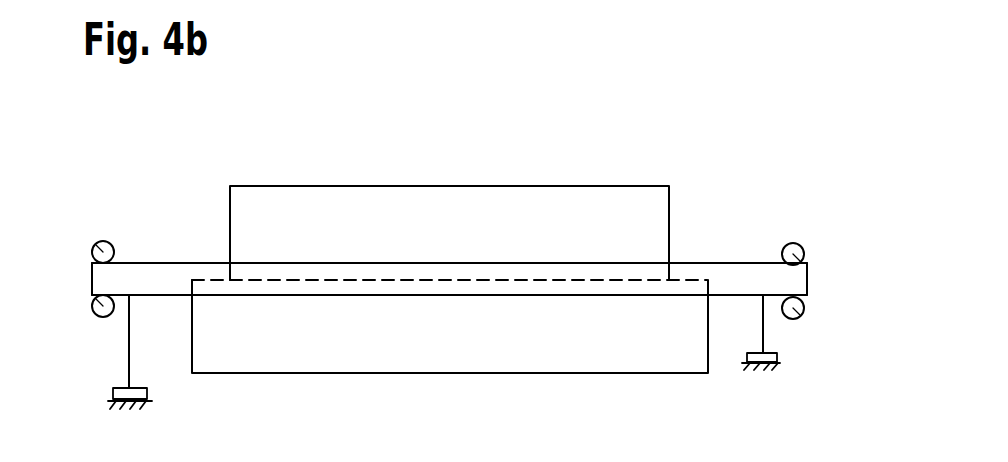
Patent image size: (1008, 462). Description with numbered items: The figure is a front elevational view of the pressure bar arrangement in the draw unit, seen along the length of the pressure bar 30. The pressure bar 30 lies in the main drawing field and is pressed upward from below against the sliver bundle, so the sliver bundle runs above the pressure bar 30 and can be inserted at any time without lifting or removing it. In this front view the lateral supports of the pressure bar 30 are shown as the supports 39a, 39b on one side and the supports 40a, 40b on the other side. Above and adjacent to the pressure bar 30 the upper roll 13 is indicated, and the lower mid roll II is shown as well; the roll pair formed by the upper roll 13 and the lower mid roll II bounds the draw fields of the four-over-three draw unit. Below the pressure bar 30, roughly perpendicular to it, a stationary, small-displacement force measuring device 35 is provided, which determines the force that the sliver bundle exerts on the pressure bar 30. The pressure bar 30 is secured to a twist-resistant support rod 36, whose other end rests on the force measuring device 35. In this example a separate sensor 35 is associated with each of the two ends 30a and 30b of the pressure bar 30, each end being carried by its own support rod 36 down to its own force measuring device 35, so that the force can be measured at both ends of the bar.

The upper roll 13 is at (621, 214).
The pressure bar 30 is at (190, 263).
The end of pressure bar 30a is at (146, 276).
The end of pressure bar 30b is at (733, 284).
The force measuring device 35 is at (113, 392).
The support rod 36 is at (131, 356).
The lateral support of pressure bar 39a is at (96, 247).
The lateral support of pressure bar 39b is at (97, 311).
The lateral support of pressure bar 40a is at (799, 249).
The lateral support of pressure bar 40b is at (800, 317).
The lower mid roll II is at (686, 348).